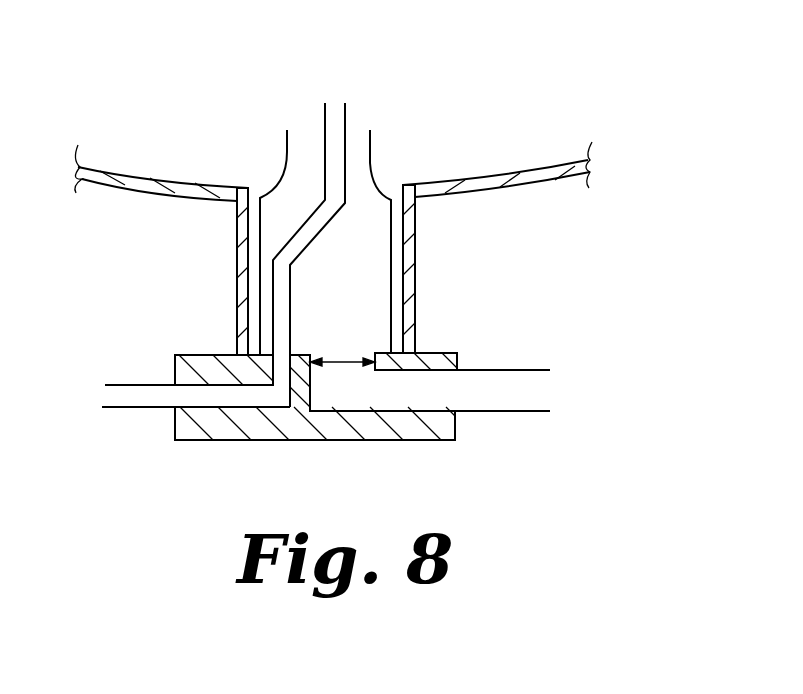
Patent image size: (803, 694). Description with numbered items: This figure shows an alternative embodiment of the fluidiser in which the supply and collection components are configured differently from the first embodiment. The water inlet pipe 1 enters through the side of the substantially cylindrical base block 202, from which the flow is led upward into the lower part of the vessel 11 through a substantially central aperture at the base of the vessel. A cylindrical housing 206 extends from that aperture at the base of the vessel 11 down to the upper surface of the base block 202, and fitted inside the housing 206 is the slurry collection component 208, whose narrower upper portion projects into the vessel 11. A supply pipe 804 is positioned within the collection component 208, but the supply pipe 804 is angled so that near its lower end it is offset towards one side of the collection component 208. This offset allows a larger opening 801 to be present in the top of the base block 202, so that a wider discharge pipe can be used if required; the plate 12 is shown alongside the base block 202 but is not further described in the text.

The water inlet pipe 1 is at (128, 395).
The vessel 11 is at (167, 188).
The plate 12 is at (523, 402).
The base block 202 is at (195, 426).
The cylindrical housing 206 is at (412, 272).
The slurry collection component 208 is at (373, 163).
The opening 801 is at (344, 362).
The supply pipe 804 is at (345, 127).